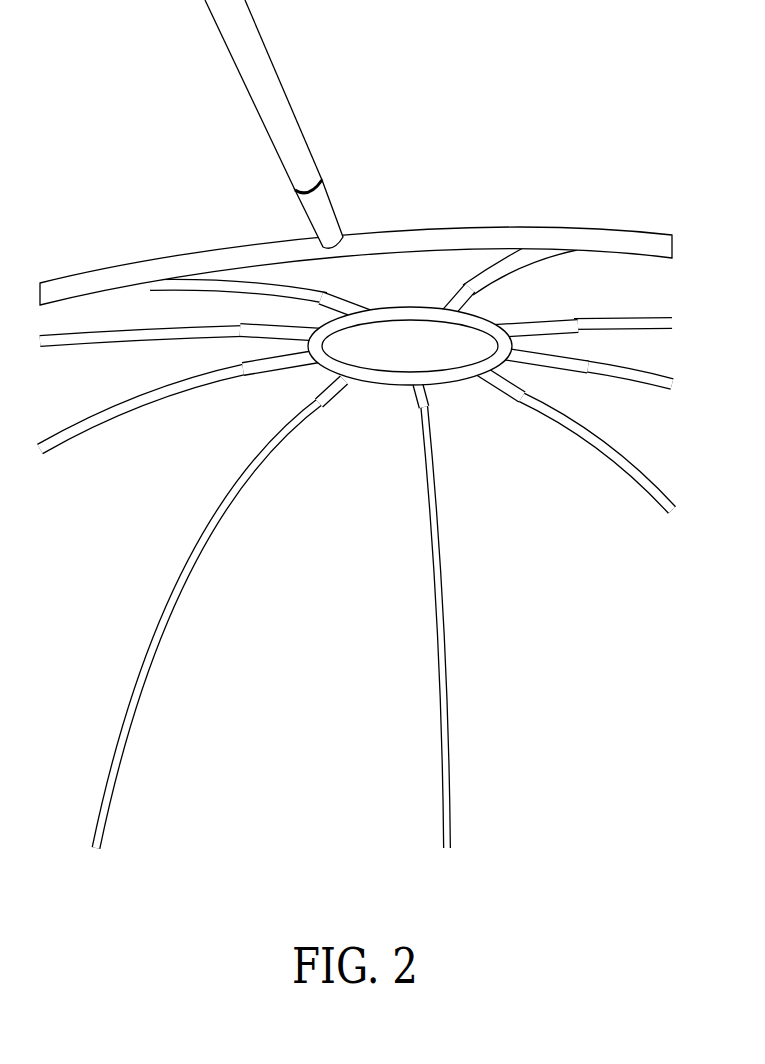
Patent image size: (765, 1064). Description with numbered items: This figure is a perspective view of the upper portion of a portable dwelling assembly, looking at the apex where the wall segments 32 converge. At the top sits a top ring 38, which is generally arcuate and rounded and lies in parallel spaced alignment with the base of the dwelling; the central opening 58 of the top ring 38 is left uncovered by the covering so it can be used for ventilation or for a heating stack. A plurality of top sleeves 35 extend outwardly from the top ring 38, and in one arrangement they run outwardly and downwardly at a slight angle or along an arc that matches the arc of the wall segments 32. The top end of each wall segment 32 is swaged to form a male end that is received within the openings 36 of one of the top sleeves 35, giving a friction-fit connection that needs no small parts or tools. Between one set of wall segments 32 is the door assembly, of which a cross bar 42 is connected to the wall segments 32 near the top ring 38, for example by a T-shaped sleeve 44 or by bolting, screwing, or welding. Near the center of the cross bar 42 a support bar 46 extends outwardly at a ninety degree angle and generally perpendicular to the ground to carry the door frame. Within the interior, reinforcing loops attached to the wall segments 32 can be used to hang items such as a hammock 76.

The wall segments 32 is at (253, 278).
The top sleeves 35 is at (257, 324).
The openings 36 is at (235, 330).
The top ring 38 is at (440, 387).
The cross bar 42 is at (500, 232).
The T-shaped sleeve 44 is at (342, 233).
The support bar 46 is at (273, 77).
The opening 58 is at (424, 357).
The hammock 76 is at (317, 708).